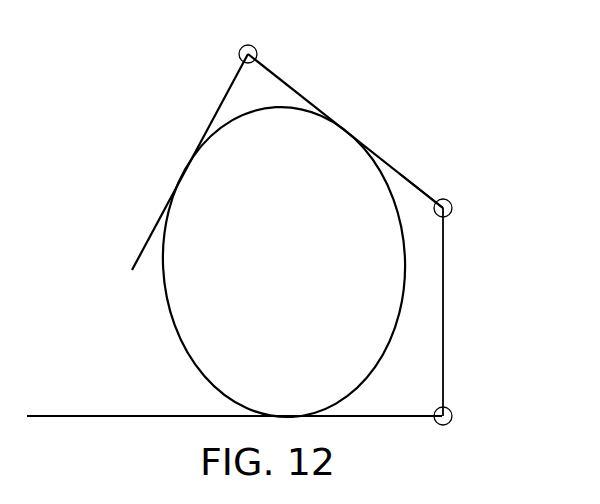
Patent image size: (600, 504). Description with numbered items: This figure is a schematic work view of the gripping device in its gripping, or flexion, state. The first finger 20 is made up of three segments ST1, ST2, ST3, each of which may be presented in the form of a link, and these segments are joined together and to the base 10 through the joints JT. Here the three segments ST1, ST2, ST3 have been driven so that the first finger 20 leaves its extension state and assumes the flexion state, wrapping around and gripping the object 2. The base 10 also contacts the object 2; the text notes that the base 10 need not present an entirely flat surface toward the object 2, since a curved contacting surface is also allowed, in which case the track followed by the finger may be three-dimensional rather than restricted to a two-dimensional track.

The object 2 is at (248, 120).
The base 10 is at (95, 413).
The first finger 20 is at (428, 189).
The segment ST1 is at (443, 330).
The segment ST2 is at (397, 167).
The segment ST3 is at (148, 240).
The joints JT is at (257, 51).